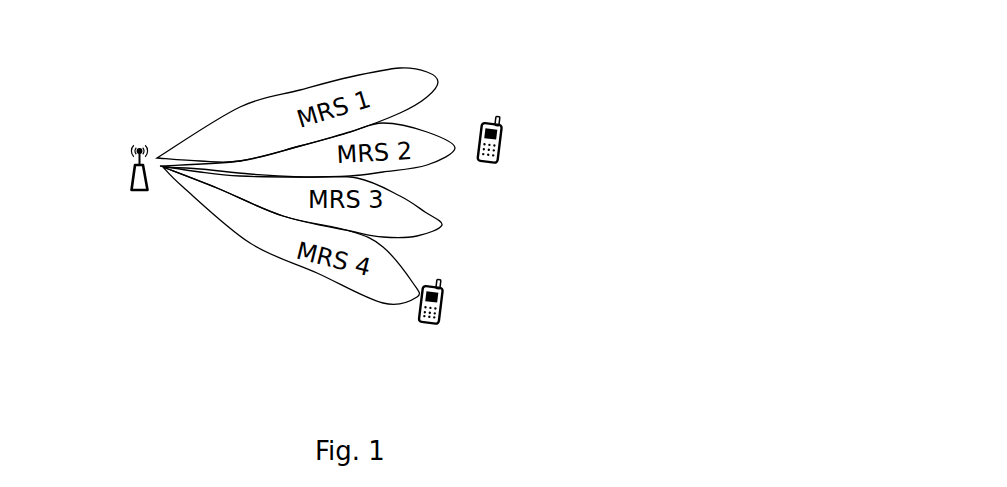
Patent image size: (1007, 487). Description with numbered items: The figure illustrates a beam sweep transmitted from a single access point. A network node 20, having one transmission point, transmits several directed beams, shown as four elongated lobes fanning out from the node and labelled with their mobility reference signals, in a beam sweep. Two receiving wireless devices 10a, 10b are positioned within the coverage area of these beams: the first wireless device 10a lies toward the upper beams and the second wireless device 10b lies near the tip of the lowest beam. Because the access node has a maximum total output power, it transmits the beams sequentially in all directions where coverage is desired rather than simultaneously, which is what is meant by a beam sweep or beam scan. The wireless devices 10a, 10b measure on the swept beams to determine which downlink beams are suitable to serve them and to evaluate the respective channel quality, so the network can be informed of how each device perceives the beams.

The network node 20 is at (135, 173).
The wireless device 10a is at (504, 137).
The wireless device 10b is at (444, 300).